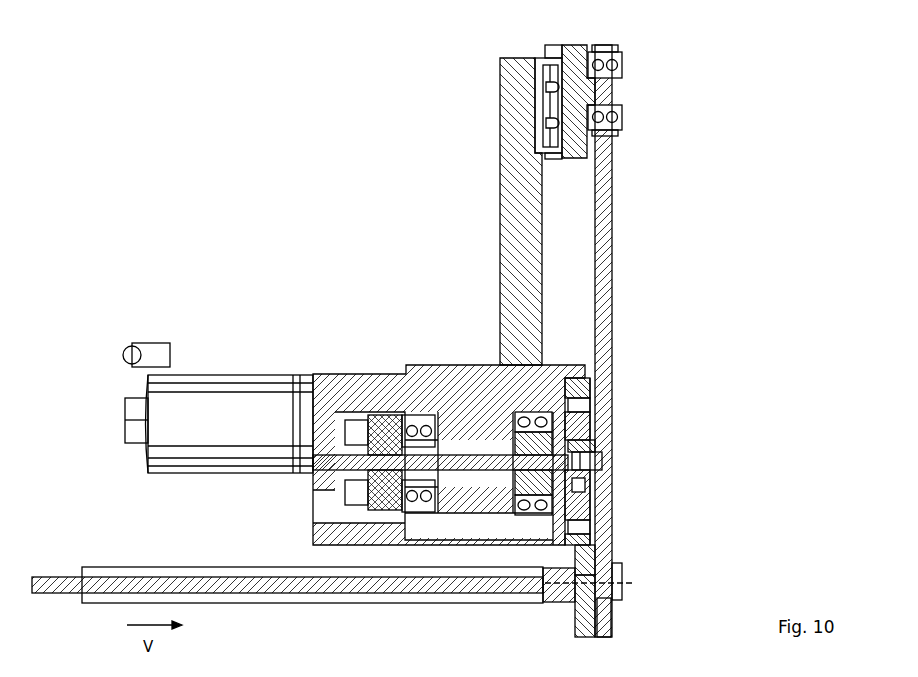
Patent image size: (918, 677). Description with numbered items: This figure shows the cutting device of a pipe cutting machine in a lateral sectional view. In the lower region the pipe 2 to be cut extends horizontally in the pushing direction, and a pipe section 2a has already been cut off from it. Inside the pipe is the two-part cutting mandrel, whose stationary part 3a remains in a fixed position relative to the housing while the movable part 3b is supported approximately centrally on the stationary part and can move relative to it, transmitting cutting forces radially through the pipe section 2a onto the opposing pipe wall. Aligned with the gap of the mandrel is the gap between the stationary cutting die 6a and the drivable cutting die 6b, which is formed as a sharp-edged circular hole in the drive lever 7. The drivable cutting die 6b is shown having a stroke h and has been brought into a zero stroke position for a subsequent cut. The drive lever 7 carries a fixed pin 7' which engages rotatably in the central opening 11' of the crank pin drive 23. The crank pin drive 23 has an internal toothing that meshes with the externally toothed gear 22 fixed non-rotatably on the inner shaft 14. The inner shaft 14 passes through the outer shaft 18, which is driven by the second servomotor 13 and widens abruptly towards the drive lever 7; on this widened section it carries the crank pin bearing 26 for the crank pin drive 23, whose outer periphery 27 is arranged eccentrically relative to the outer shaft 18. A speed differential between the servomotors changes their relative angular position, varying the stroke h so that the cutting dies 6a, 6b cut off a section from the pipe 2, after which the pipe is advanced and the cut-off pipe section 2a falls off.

The pipe 2 is at (488, 606).
The pipe section 2a is at (617, 598).
The stationary part of the cutting mandrel 3a is at (560, 592).
The movable part of the cutting mandrel 3b is at (607, 593).
The stationary cutting die 6a is at (585, 612).
The drivable cutting die 6b is at (608, 572).
The drive lever 7 is at (624, 341).
The pin 7' is at (608, 460).
The central opening 11' is at (629, 440).
The second servomotor 13 is at (230, 420).
The inner shaft 14 is at (455, 455).
The outer shaft 18 is at (472, 430).
The gear 22 is at (590, 432).
The crank pin drive 23 is at (592, 494).
The crank pin bearing 26 is at (580, 397).
The outer periphery 27 is at (588, 380).
The stroke h is at (596, 583).